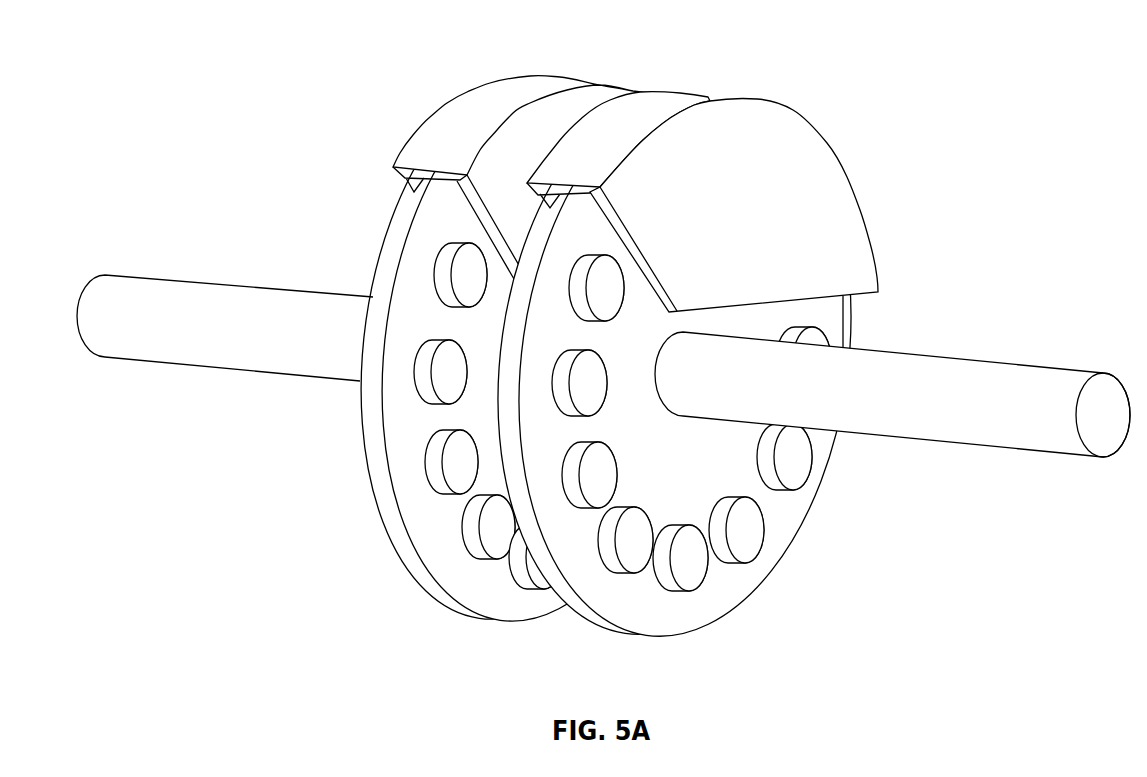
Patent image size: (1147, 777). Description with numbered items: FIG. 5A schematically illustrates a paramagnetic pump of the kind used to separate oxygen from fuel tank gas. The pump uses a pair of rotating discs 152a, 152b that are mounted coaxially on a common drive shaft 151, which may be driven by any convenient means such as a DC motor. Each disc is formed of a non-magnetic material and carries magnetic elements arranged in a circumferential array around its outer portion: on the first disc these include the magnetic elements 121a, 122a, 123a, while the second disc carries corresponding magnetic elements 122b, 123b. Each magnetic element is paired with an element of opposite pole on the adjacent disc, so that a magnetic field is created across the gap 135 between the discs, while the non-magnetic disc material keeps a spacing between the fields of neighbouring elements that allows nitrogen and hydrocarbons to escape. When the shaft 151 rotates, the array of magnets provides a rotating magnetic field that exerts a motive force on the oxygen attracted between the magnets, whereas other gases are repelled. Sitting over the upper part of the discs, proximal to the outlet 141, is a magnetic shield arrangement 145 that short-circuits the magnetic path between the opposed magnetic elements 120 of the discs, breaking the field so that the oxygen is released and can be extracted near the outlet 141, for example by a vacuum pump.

The magnetic elements 120 is at (610, 270).
The magnetic element 121a is at (466, 258).
The magnetic element 122a is at (447, 352).
The magnetic element 123a is at (450, 463).
The magnetic element 122b is at (596, 380).
The magnetic element 123b is at (606, 456).
The gap 135 is at (577, 355).
The outlet 141 is at (702, 175).
The magnetic shield arrangement 145 is at (533, 84).
The drive shaft 151 is at (1007, 376).
The rotating disc 152a is at (500, 360).
The rotating disc 152b is at (674, 358).